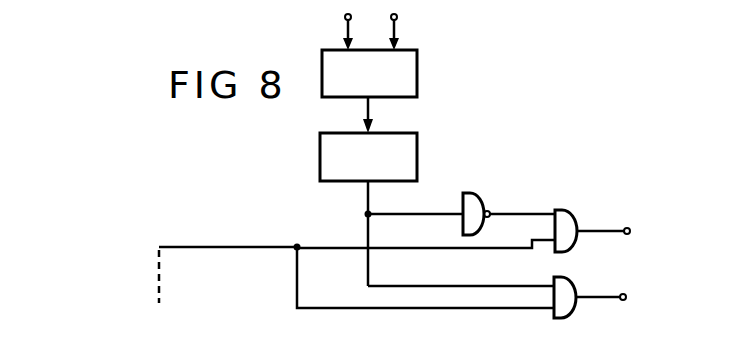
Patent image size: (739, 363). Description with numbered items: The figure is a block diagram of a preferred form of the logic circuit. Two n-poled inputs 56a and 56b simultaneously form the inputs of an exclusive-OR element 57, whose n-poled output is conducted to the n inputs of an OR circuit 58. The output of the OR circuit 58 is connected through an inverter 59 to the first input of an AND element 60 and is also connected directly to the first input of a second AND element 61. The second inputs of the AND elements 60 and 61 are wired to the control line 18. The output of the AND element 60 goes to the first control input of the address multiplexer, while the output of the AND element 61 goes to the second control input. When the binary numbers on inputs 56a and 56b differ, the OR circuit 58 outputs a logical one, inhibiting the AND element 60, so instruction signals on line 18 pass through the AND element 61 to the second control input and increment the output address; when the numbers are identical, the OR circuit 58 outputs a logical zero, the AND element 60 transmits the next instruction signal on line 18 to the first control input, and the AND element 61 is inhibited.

The n-poled input 56a is at (345, 17).
The n-poled input 56b is at (397, 17).
The exclusive-OR element 57 is at (399, 81).
The OR circuit 58 is at (400, 159).
The inverter 59 is at (487, 184).
The AND element 60 is at (567, 223).
The second AND element 61 is at (566, 288).
The control line 18 is at (158, 258).